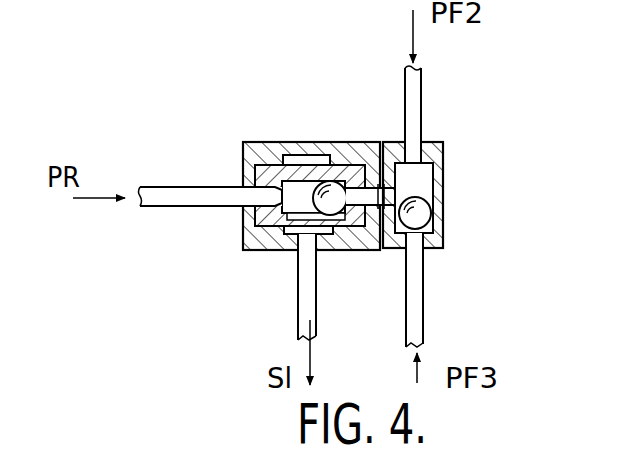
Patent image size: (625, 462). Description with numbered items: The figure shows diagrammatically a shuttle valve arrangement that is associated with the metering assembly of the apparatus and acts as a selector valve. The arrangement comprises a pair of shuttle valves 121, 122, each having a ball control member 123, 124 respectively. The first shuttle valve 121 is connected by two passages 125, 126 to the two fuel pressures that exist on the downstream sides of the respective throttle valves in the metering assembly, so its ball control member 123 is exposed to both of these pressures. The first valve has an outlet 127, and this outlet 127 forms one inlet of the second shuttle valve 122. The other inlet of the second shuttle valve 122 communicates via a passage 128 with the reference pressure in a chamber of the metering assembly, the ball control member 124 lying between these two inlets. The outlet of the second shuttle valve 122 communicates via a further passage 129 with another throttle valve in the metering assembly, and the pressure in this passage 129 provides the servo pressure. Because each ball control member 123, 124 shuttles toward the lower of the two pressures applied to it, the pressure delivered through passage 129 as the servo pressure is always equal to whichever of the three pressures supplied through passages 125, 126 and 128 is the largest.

The shuttle valve 121 is at (452, 171).
The shuttle valve 122 is at (315, 133).
The ball control member 123 is at (419, 214).
The ball control member 124 is at (338, 200).
The passage 125 is at (413, 100).
The passage 126 is at (415, 318).
The outlet 127 is at (371, 200).
The passage 128 is at (176, 186).
The passage 129 is at (307, 300).